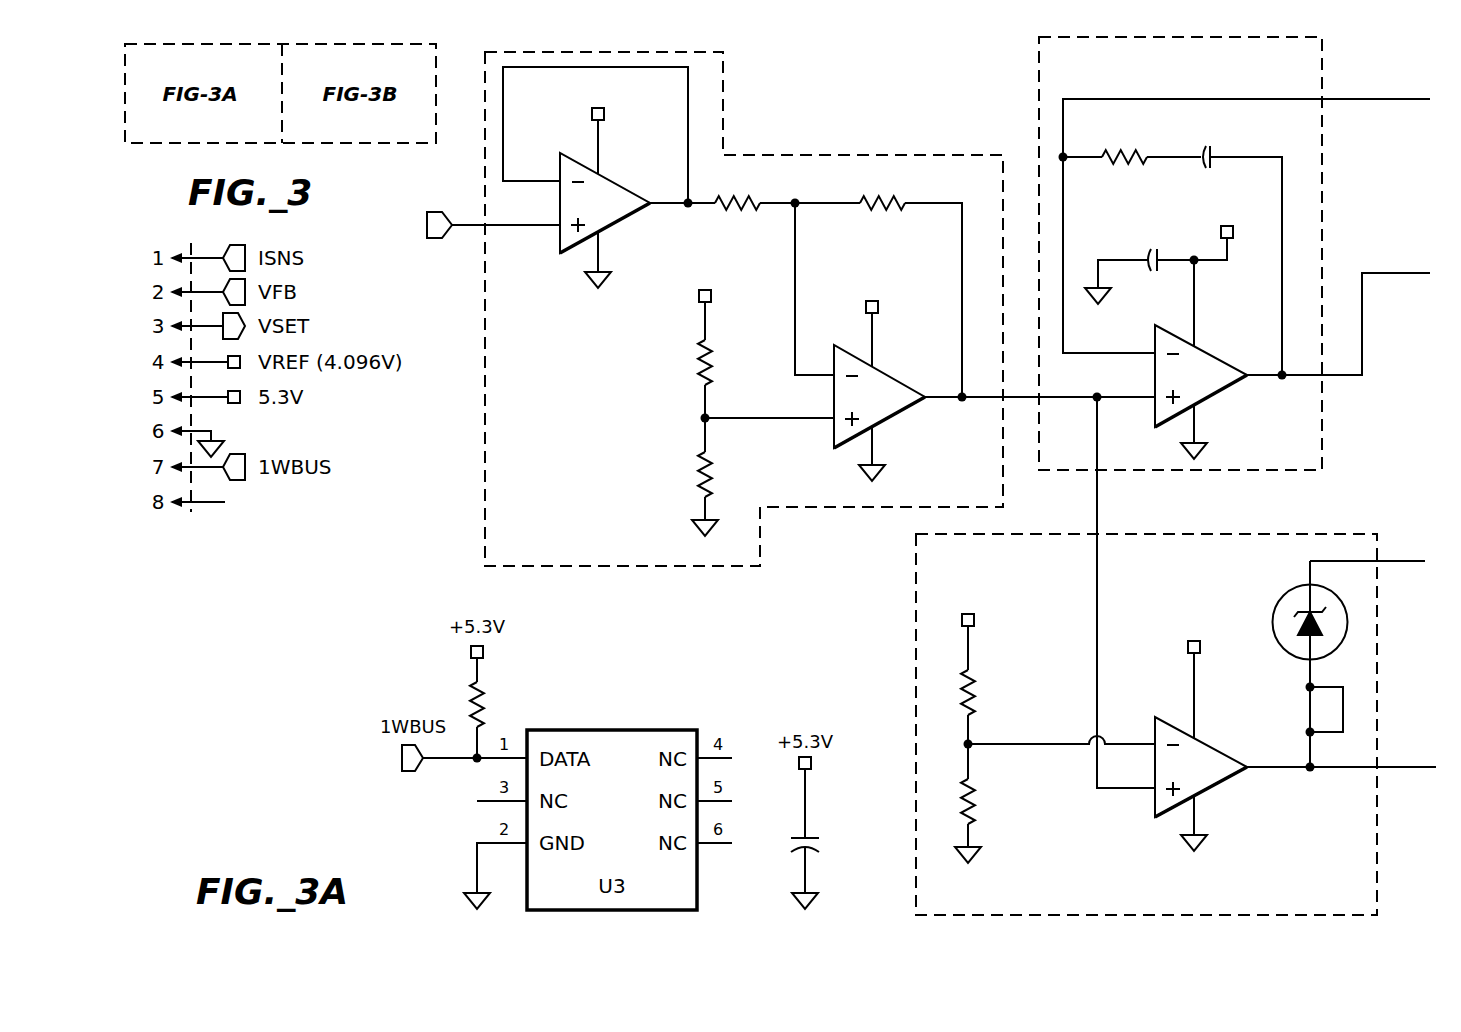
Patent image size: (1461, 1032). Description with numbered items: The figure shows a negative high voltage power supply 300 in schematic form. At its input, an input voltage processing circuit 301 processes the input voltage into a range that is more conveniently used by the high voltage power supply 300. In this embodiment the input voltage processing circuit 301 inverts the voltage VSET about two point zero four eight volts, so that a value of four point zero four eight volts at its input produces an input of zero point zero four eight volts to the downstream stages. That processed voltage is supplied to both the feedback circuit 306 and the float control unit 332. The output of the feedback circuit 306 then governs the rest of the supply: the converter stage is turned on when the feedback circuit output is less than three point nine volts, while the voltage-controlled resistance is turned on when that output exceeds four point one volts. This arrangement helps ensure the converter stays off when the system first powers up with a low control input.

The high voltage power supply 300 is at (836, 72).
The input voltage processing circuit 301 is at (583, 567).
The feedback circuit 306 is at (1322, 168).
The float control unit 332 is at (916, 642).